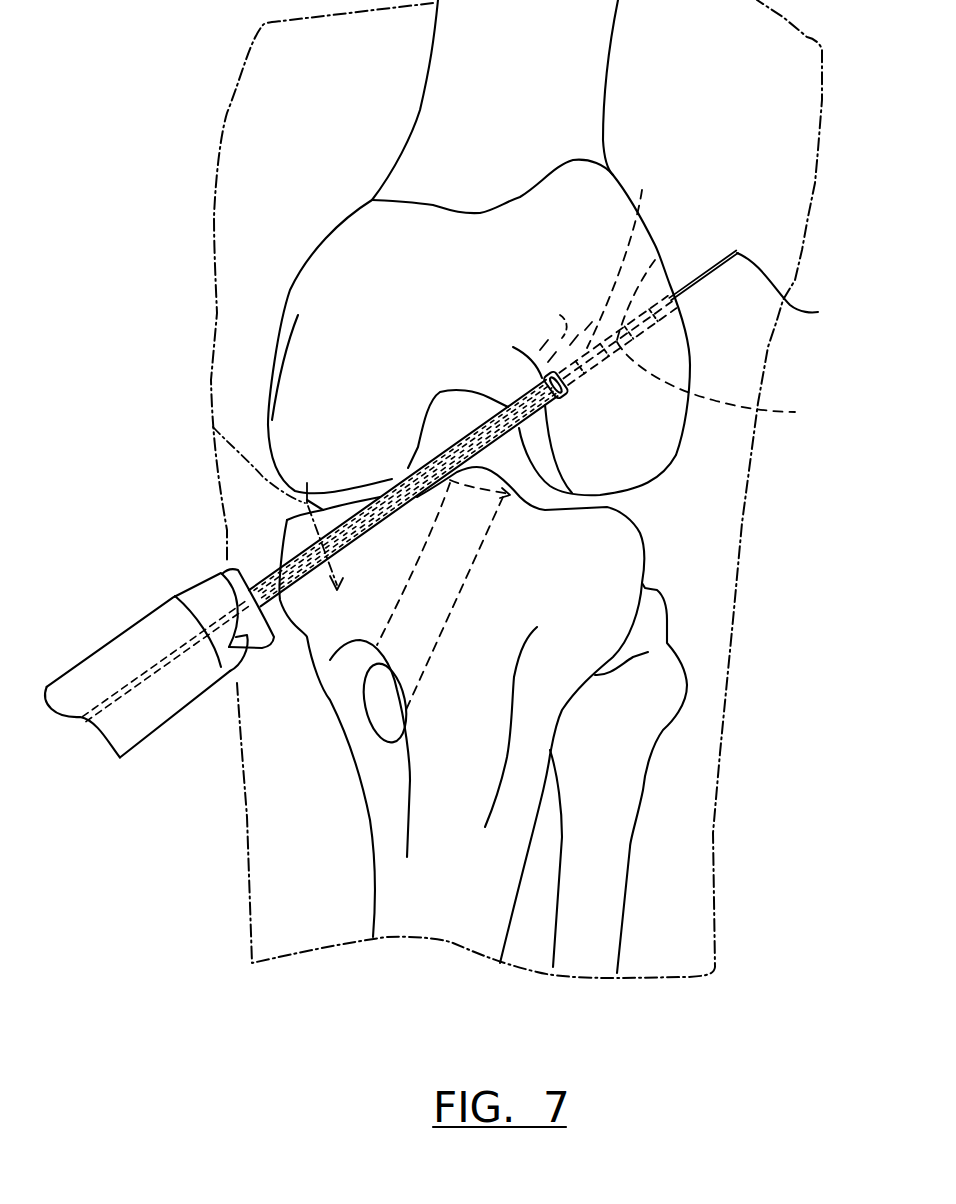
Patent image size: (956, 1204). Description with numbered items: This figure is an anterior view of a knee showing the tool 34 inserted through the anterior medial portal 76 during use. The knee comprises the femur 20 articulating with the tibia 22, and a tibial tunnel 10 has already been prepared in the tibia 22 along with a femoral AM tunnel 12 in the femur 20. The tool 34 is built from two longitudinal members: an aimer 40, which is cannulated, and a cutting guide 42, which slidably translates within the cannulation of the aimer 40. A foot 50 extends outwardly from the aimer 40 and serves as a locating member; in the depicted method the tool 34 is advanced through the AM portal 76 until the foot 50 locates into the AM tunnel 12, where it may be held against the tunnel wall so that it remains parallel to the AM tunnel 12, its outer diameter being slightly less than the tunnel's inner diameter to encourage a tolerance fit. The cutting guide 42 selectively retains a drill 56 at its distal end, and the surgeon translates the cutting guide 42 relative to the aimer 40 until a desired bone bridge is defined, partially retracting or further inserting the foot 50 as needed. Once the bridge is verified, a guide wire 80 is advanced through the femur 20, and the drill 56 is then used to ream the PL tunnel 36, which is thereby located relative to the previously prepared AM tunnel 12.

The tibial tunnel 10 is at (463, 540).
The femoral AM tunnel 12 is at (621, 251).
The femur 20 is at (437, 140).
The tibia 22 is at (383, 787).
The tool 34 is at (142, 635).
The PL tunnel 36 is at (723, 388).
The aimer 40 is at (463, 440).
The cutting guide 42 is at (560, 397).
The foot 50 is at (548, 338).
The drill 56 is at (663, 257).
The AM portal 76 is at (207, 423).
The guide wire 80 is at (792, 293).